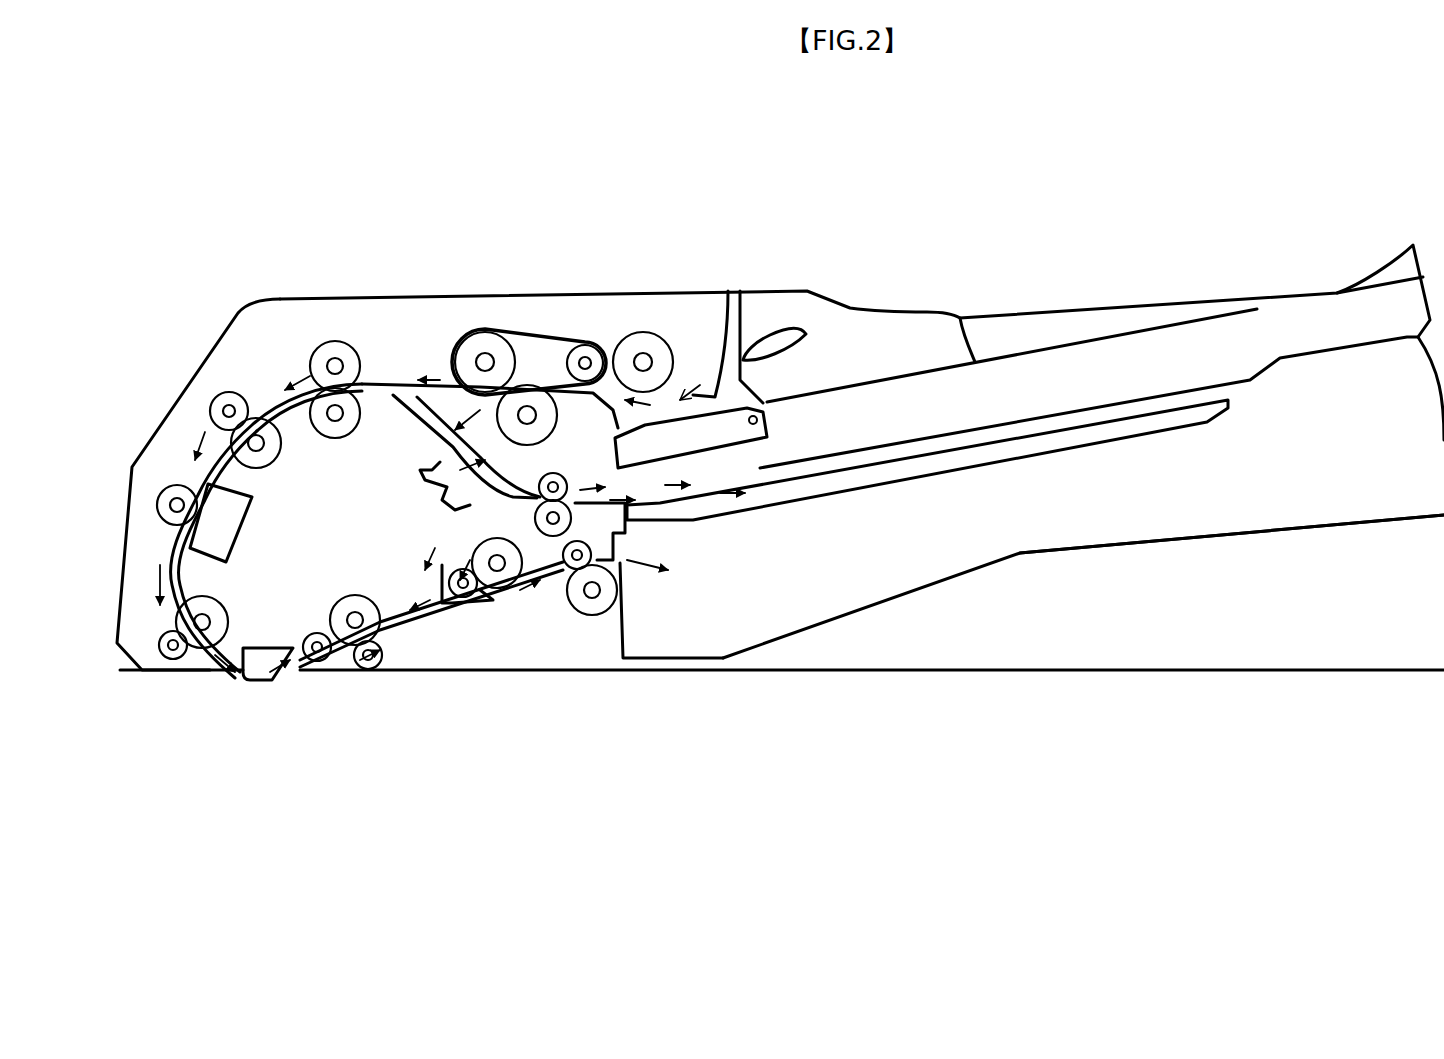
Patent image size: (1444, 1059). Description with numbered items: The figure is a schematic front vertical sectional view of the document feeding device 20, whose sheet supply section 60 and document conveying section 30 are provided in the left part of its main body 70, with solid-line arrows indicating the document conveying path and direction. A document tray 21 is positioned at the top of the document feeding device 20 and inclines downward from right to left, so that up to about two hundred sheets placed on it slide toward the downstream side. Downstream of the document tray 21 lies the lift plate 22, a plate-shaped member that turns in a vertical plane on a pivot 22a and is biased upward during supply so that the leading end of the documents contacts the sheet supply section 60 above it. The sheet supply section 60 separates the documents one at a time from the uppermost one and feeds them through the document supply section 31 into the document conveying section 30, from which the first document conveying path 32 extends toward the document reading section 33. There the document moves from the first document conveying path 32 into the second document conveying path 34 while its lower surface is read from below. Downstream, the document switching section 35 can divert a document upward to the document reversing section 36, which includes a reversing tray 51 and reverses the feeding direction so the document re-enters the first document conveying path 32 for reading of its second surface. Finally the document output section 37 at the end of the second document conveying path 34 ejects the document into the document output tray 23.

The document feeding device 20 is at (1163, 185).
The document tray 21 is at (918, 372).
The lift plate 22 is at (712, 402).
The pivot 22a is at (760, 414).
The document output tray 23 is at (1178, 538).
The document conveying section 30 is at (207, 300).
The document supply section 31 is at (727, 290).
The first document conveying path 32 is at (405, 385).
The document reading section 33 is at (258, 692).
The second document conveying path 34 is at (463, 613).
The document switching section 35 is at (395, 652).
The document reversing section 36 is at (597, 515).
The document output section 37 is at (630, 582).
The reversing tray 51 is at (815, 490).
The sheet supply section 60 is at (601, 330).
The main body 70 is at (905, 672).